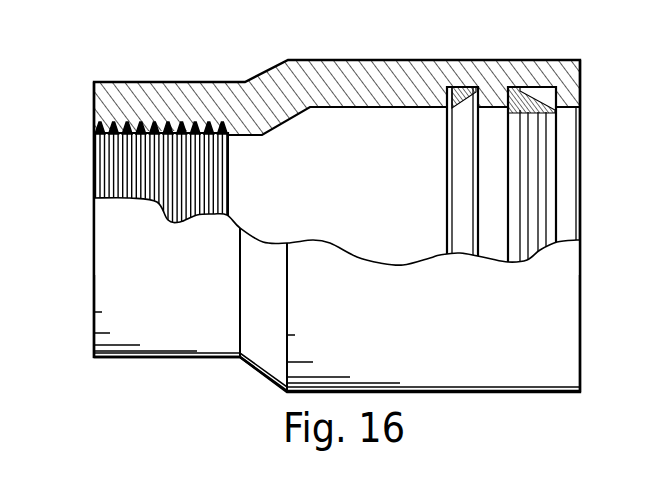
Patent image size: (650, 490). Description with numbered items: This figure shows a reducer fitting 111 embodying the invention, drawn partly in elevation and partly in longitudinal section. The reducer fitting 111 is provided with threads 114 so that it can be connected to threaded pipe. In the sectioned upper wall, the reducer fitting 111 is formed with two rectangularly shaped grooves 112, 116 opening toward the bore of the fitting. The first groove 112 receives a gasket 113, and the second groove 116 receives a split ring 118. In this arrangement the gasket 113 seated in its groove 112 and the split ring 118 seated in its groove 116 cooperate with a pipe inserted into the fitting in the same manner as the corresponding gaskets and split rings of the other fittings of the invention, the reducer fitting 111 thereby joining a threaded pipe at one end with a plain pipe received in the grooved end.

The reducer fitting 111 is at (312, 59).
The groove 112 is at (447, 86).
The gasket 113 is at (453, 87).
The threads 114 is at (135, 126).
The groove 116 is at (558, 92).
The split ring 118 is at (535, 92).